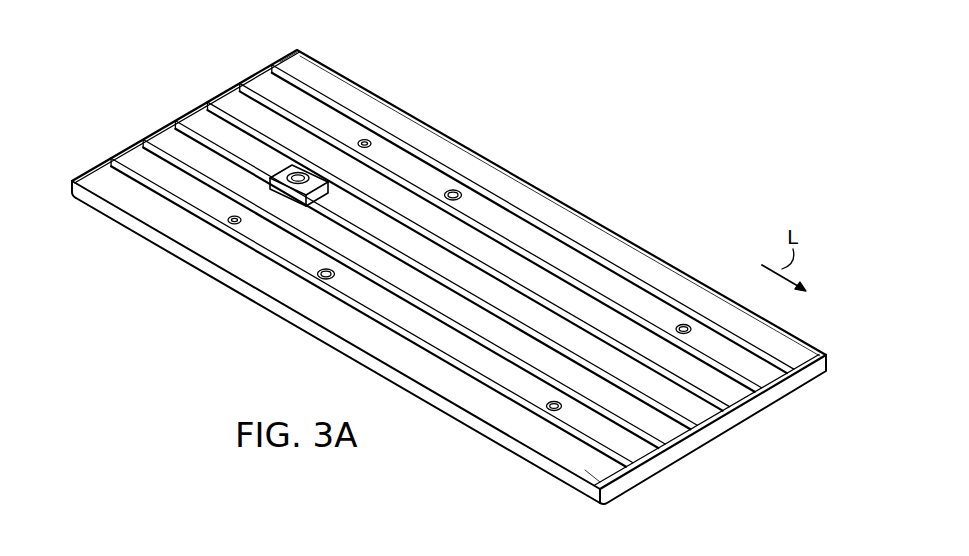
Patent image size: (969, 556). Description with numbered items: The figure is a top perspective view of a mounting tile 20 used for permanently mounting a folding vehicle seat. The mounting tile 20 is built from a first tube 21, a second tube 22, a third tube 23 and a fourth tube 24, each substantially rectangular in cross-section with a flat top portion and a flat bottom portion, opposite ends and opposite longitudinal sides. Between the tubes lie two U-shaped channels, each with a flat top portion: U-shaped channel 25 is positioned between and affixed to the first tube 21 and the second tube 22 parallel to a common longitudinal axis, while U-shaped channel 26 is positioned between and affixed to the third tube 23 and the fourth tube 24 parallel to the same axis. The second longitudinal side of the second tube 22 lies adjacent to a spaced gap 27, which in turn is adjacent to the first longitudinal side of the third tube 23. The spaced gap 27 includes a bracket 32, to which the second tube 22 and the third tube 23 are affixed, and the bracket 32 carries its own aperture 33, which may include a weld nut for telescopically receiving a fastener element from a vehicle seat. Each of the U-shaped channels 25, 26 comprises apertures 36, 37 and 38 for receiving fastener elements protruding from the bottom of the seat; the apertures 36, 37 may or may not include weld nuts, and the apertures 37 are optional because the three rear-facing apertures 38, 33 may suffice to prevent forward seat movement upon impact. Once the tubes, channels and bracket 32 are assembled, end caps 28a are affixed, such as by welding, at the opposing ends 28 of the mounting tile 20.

The mounting tile 20 is at (565, 204).
The first tube 21 is at (352, 95).
The second tube 22 is at (228, 103).
The third tube 23 is at (178, 147).
The fourth tube 24 is at (103, 185).
The U-shaped channel 25 is at (752, 365).
The U-shaped channel 26 is at (618, 440).
The spaced gap 27 is at (685, 410).
The opposing ends 28 is at (297, 62).
The end caps 28a is at (240, 77).
The bracket 32 is at (315, 203).
The aperture 33 is at (300, 176).
The aperture 36 is at (685, 327).
The aperture 37 is at (457, 191).
The aperture 38 is at (365, 141).